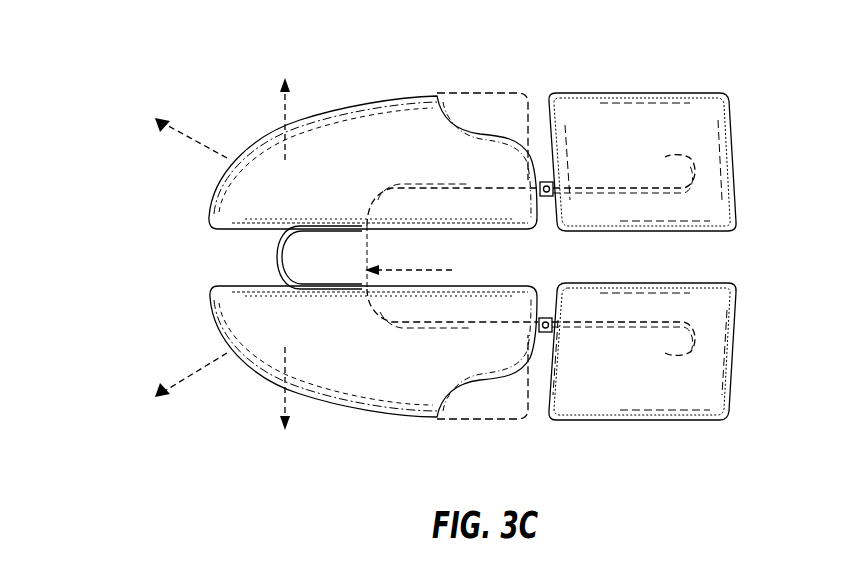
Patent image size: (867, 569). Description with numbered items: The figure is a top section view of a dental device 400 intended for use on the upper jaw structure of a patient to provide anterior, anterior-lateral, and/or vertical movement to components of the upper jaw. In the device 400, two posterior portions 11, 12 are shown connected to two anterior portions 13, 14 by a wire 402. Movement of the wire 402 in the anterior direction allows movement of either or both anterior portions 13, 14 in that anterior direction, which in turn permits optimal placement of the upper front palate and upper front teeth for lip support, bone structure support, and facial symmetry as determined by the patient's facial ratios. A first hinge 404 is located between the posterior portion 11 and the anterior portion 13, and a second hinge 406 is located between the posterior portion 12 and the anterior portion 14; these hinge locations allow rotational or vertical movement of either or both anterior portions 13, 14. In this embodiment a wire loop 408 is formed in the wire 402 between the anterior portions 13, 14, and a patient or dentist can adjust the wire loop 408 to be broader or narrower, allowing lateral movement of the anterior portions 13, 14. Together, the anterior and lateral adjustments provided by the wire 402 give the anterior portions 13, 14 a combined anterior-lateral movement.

The dental device 400 is at (133, 66).
The anterior portion 14 is at (362, 110).
The anterior portion 13 is at (398, 403).
The posterior portion 12 is at (647, 103).
The posterior portion 11 is at (660, 403).
The wire 402 is at (427, 328).
The first hinge 404 is at (546, 317).
The second hinge 406 is at (547, 197).
The wire loop 408 is at (273, 265).